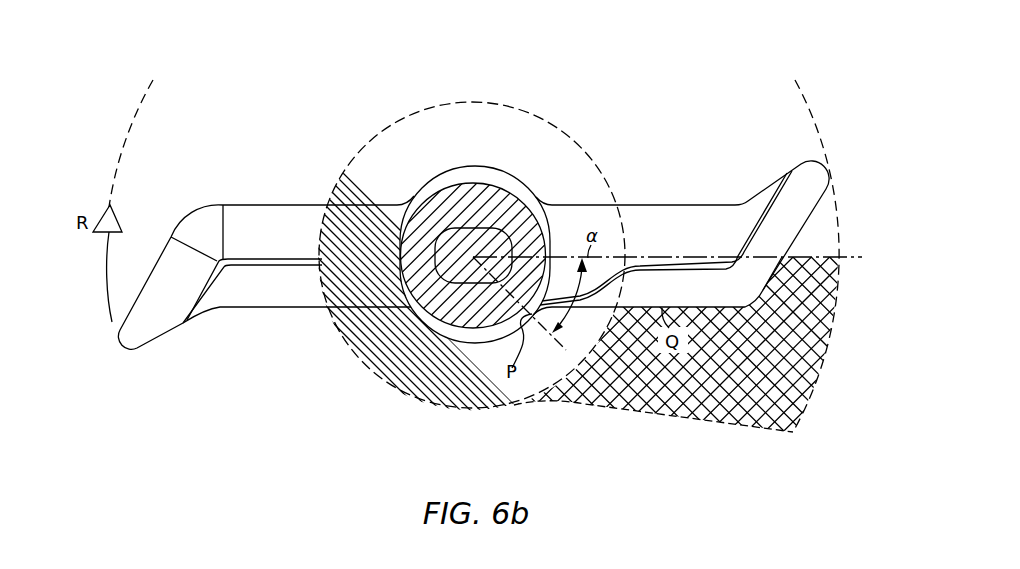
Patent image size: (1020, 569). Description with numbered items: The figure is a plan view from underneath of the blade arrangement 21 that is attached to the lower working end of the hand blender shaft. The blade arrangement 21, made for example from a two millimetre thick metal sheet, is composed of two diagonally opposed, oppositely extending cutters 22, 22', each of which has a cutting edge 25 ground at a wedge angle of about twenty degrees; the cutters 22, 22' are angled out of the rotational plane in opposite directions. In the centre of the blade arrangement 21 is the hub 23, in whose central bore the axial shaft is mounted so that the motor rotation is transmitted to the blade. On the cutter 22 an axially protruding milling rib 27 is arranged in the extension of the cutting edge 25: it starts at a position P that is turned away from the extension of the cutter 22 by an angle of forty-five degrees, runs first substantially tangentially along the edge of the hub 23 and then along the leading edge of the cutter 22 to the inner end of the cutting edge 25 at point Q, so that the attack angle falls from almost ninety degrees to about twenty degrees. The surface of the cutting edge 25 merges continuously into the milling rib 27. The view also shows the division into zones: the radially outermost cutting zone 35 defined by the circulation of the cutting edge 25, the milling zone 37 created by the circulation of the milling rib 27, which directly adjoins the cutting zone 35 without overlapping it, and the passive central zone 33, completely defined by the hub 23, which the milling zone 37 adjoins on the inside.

The blade arrangement 21 is at (256, 136).
The cutter 22 is at (681, 220).
The cutter 22' is at (252, 323).
The hub 23 is at (505, 173).
The cutting edge 25 is at (766, 308).
The milling rib 27 is at (624, 408).
The passive central zone 33 is at (462, 185).
The cutting zone 35 is at (773, 359).
The milling zone 37 is at (382, 348).